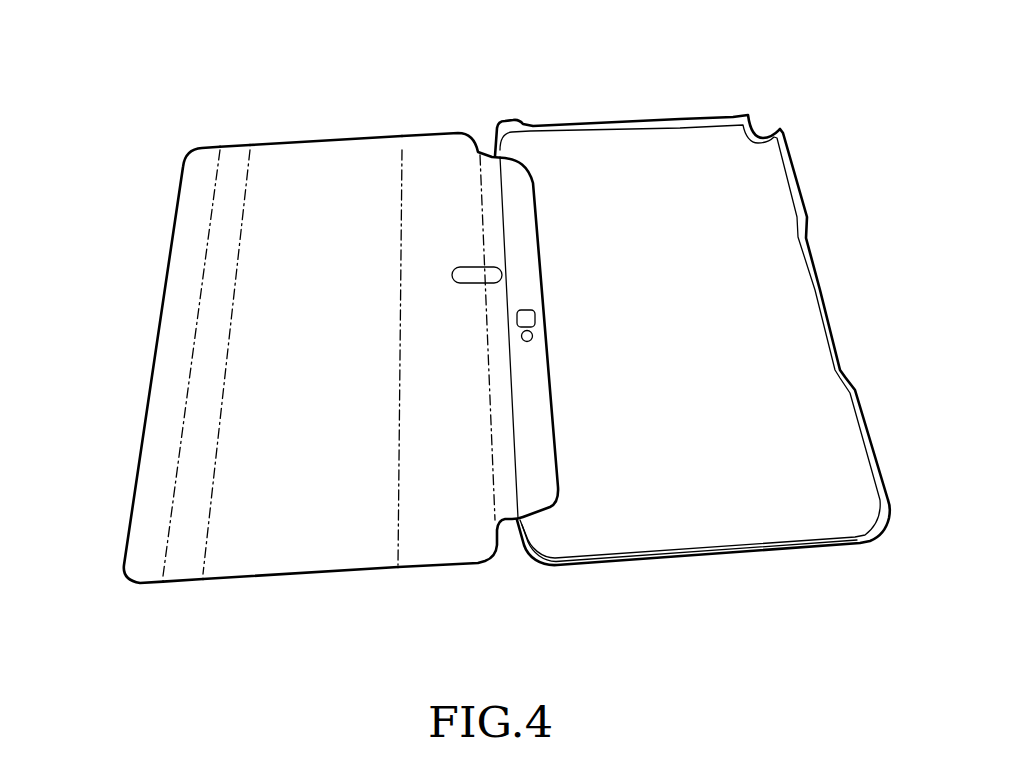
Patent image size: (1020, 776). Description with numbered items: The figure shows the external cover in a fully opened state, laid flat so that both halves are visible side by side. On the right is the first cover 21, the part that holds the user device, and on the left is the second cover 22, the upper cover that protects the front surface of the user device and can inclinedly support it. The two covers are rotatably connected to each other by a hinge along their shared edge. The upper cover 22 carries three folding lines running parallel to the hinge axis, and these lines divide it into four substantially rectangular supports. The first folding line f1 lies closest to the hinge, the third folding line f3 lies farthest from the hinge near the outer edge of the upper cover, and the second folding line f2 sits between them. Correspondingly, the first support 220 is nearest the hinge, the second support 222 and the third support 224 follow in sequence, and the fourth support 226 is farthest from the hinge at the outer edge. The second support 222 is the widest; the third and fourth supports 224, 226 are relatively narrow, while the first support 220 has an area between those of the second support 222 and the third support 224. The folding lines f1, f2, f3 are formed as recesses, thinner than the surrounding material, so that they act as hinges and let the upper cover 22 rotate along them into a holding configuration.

The first cover 21 is at (633, 111).
The second cover 22 is at (332, 129).
The first support 220 is at (448, 548).
The second support 222 is at (295, 553).
The third support 224 is at (188, 562).
The fourth support 226 is at (143, 570).
The first folding line f1 is at (402, 157).
The second folding line f2 is at (250, 160).
The third folding line f3 is at (217, 160).